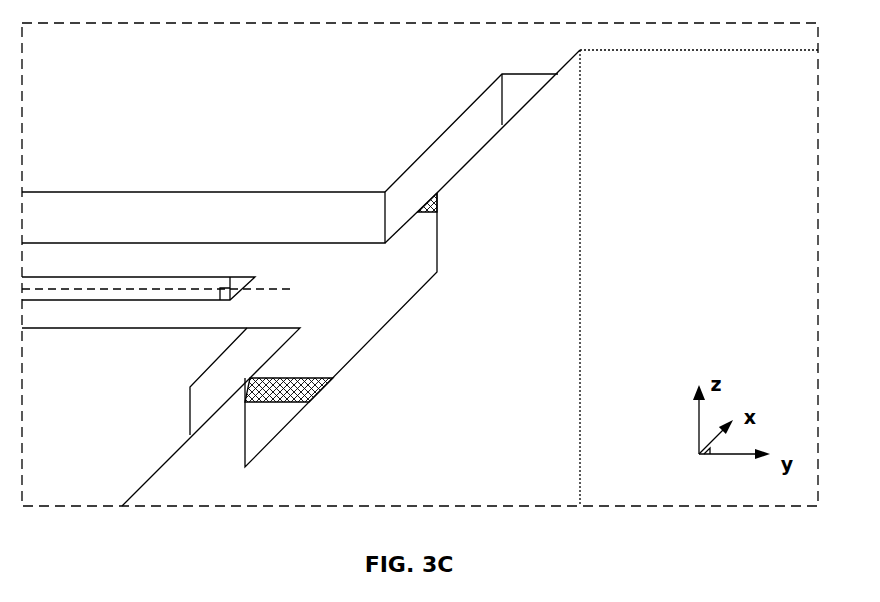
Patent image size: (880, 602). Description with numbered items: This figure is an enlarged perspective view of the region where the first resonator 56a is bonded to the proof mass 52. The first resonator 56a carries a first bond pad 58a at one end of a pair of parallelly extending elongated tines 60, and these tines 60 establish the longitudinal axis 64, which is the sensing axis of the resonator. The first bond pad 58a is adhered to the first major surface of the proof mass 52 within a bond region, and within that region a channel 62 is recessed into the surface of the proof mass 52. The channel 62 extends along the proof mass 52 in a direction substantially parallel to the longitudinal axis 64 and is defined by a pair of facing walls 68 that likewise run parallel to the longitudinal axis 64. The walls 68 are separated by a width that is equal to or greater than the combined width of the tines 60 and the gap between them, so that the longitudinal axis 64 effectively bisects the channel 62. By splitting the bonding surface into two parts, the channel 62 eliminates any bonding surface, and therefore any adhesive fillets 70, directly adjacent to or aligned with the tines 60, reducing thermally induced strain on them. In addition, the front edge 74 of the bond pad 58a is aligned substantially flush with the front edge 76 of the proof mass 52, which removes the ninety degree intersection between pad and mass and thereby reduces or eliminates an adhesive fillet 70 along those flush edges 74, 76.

The proof mass 52 is at (498, 400).
The first resonator 56a is at (142, 205).
The first bond pad 58a is at (320, 362).
The elongated tines 60 is at (45, 312).
The channel 62 is at (348, 313).
The longitudinal axis 64 is at (222, 298).
The facing walls 68 is at (428, 243).
The adhesive fillets 70 is at (437, 203).
The front edge of bond pad 74 is at (442, 153).
The front edge of proof mass 76 is at (488, 153).